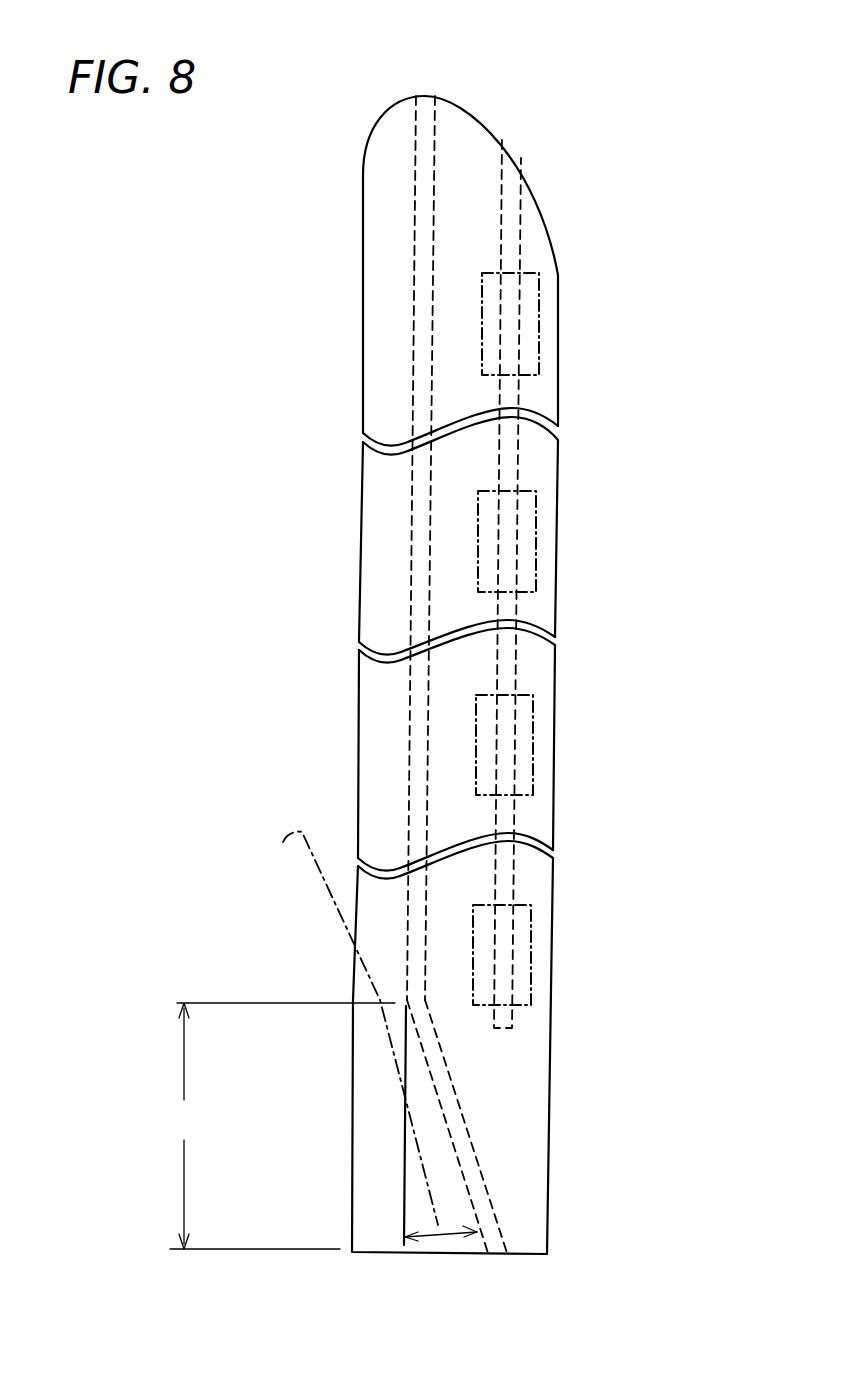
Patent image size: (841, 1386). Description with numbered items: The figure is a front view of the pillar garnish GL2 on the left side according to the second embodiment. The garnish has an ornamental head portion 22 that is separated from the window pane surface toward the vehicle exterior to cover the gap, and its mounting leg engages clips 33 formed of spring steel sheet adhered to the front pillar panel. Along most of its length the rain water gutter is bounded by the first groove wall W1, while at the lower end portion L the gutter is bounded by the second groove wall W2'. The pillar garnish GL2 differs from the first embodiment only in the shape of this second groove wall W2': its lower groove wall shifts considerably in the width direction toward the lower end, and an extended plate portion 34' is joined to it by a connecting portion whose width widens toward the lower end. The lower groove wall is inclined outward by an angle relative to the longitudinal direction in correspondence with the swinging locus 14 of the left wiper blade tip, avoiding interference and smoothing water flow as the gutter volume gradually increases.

The pillar garnish GL2 is at (575, 390).
The ornamental head portion 22 is at (380, 764).
The first groove wall W1 is at (408, 697).
The clip 33 is at (533, 737).
The extended plate portion 34' is at (593, 584).
The swinging locus 14 is at (325, 897).
The second groove wall W2' is at (540, 1126).
The lower end portion L is at (282, 1126).